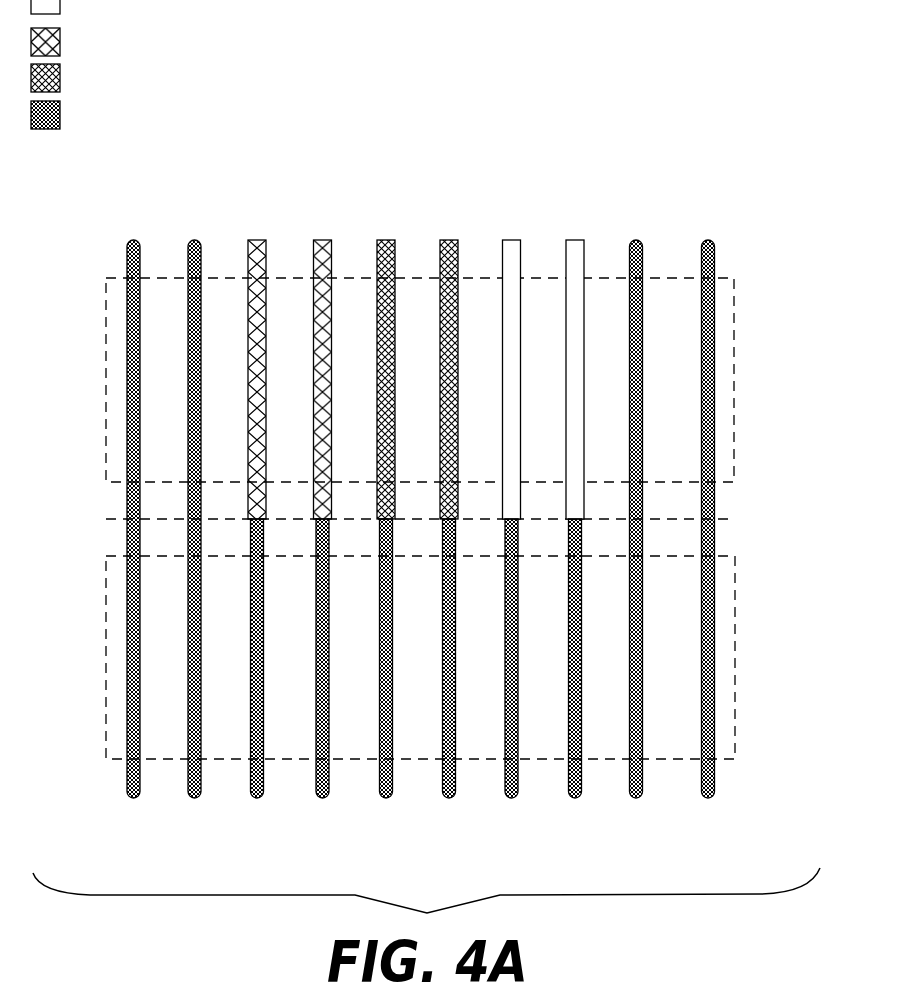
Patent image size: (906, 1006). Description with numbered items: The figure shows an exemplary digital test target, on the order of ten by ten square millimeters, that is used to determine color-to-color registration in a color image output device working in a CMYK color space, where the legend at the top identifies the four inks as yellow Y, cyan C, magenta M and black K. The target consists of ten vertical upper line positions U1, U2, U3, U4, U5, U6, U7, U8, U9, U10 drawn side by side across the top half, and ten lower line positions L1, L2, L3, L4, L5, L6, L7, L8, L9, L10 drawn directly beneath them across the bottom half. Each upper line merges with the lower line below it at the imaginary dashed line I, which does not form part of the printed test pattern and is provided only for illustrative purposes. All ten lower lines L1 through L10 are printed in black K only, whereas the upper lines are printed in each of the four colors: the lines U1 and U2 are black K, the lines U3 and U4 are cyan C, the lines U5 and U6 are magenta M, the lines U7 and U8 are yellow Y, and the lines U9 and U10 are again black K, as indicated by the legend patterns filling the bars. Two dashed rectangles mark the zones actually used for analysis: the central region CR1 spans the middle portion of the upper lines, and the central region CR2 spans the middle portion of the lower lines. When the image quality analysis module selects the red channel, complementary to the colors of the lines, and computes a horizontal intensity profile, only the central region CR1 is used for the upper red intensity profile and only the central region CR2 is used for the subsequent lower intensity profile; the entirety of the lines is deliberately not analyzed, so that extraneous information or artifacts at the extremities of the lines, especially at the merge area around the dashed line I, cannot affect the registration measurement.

The yellow Y is at (63, 10).
The cyan C is at (64, 44).
The magenta M is at (66, 78).
The black K is at (64, 116).
The central region CR1 is at (734, 313).
The central region CR2 is at (735, 625).
The imaginary dashed line I is at (733, 518).
The upper line position U1 is at (134, 361).
The upper line position U2 is at (195, 361).
The upper line position U3 is at (257, 361).
The upper line position U4 is at (323, 361).
The upper line position U5 is at (386, 361).
The upper line position U6 is at (449, 361).
The upper line position U7 is at (512, 361).
The upper line position U8 is at (575, 361).
The upper line position U9 is at (636, 361).
The upper line position U10 is at (708, 361).
The lower line position L1 is at (134, 682).
The lower line position L2 is at (195, 682).
The lower line position L3 is at (257, 682).
The lower line position L4 is at (323, 682).
The lower line position L5 is at (386, 682).
The lower line position L6 is at (449, 682).
The lower line position L7 is at (512, 682).
The lower line position L8 is at (575, 682).
The lower line position L9 is at (636, 682).
The lower line position L10 is at (708, 682).